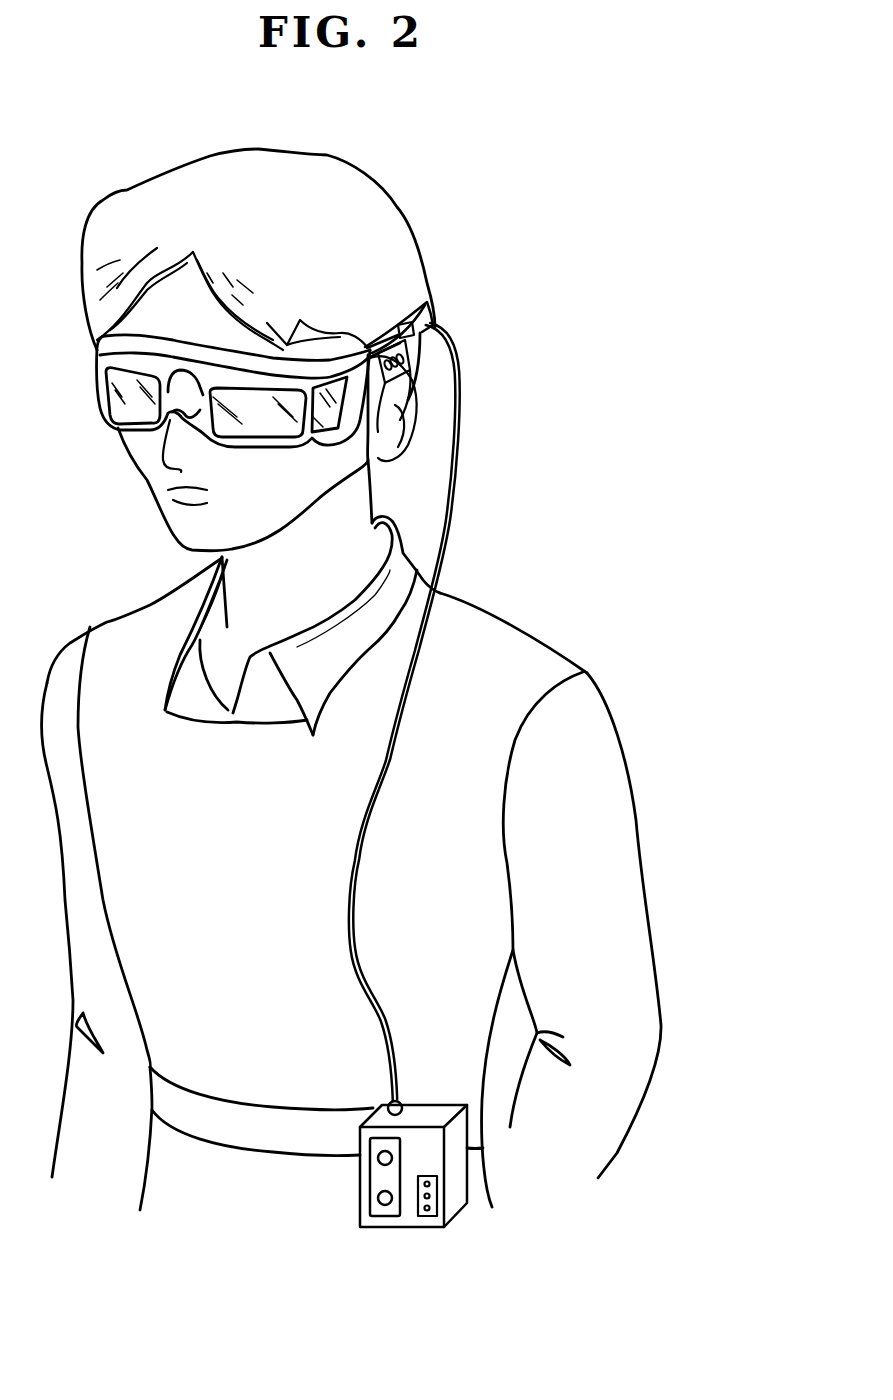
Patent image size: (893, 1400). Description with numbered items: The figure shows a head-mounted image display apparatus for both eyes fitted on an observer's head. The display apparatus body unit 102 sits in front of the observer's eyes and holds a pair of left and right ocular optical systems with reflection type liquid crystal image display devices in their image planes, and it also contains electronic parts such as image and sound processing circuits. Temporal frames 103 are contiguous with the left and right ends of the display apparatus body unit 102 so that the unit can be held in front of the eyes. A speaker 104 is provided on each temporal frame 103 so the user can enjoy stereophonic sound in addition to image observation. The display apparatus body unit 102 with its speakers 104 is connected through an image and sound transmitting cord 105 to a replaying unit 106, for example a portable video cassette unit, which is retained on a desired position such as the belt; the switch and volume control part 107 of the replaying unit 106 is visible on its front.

The display apparatus body unit 102 is at (283, 358).
The temporal frame 103 is at (423, 332).
The speaker 104 is at (398, 405).
The image and sound transmitting cord 105 is at (455, 547).
The replaying unit 106 is at (360, 1197).
The switch and volume control part 107 is at (437, 1193).